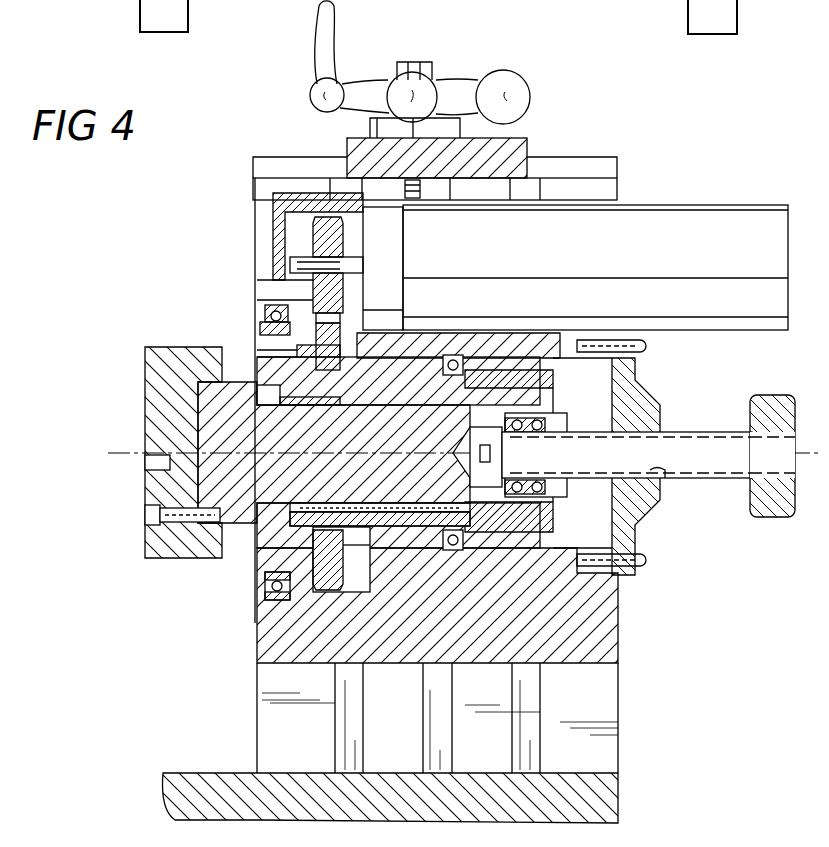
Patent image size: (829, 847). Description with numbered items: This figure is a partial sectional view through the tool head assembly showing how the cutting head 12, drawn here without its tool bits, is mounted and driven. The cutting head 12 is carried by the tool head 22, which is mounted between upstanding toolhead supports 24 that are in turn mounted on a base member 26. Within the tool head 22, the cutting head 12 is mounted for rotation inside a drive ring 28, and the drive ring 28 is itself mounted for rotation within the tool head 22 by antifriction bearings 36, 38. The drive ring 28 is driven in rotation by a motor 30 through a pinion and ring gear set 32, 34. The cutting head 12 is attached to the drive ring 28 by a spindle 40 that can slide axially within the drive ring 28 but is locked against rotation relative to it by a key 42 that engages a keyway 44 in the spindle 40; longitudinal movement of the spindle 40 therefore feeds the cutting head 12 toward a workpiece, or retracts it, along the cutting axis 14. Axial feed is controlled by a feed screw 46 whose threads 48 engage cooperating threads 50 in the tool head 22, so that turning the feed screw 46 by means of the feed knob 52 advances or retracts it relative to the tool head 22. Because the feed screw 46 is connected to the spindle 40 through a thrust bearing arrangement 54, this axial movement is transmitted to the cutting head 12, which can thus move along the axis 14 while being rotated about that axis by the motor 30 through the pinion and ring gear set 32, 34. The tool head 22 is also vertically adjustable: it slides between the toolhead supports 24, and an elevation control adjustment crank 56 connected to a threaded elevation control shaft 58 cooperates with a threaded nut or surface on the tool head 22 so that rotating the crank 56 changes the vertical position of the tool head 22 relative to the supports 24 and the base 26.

The cutting head 12 is at (170, 560).
The axis 14 is at (120, 455).
The tool head 22 is at (275, 625).
The toolhead supports 24 is at (618, 735).
The base member 26 is at (618, 795).
The drive ring 28 is at (268, 558).
The motor 30 is at (604, 266).
The pinion 32 is at (323, 295).
The ring gear 34 is at (307, 342).
The antifriction bearing 36 is at (268, 592).
The antifriction bearing 38 is at (455, 355).
The spindle 40 is at (340, 466).
The key 42 is at (345, 512).
The keyway 44 is at (380, 496).
The feed screw 46 is at (718, 442).
The threads 48 is at (725, 478).
The cooperating threads 50 is at (660, 472).
The feed knob 52 is at (798, 370).
The thrust bearing arrangement 54 is at (540, 420).
The elevation control adjustment crank 56 is at (522, 90).
The threaded elevation control shaft 58 is at (410, 62).